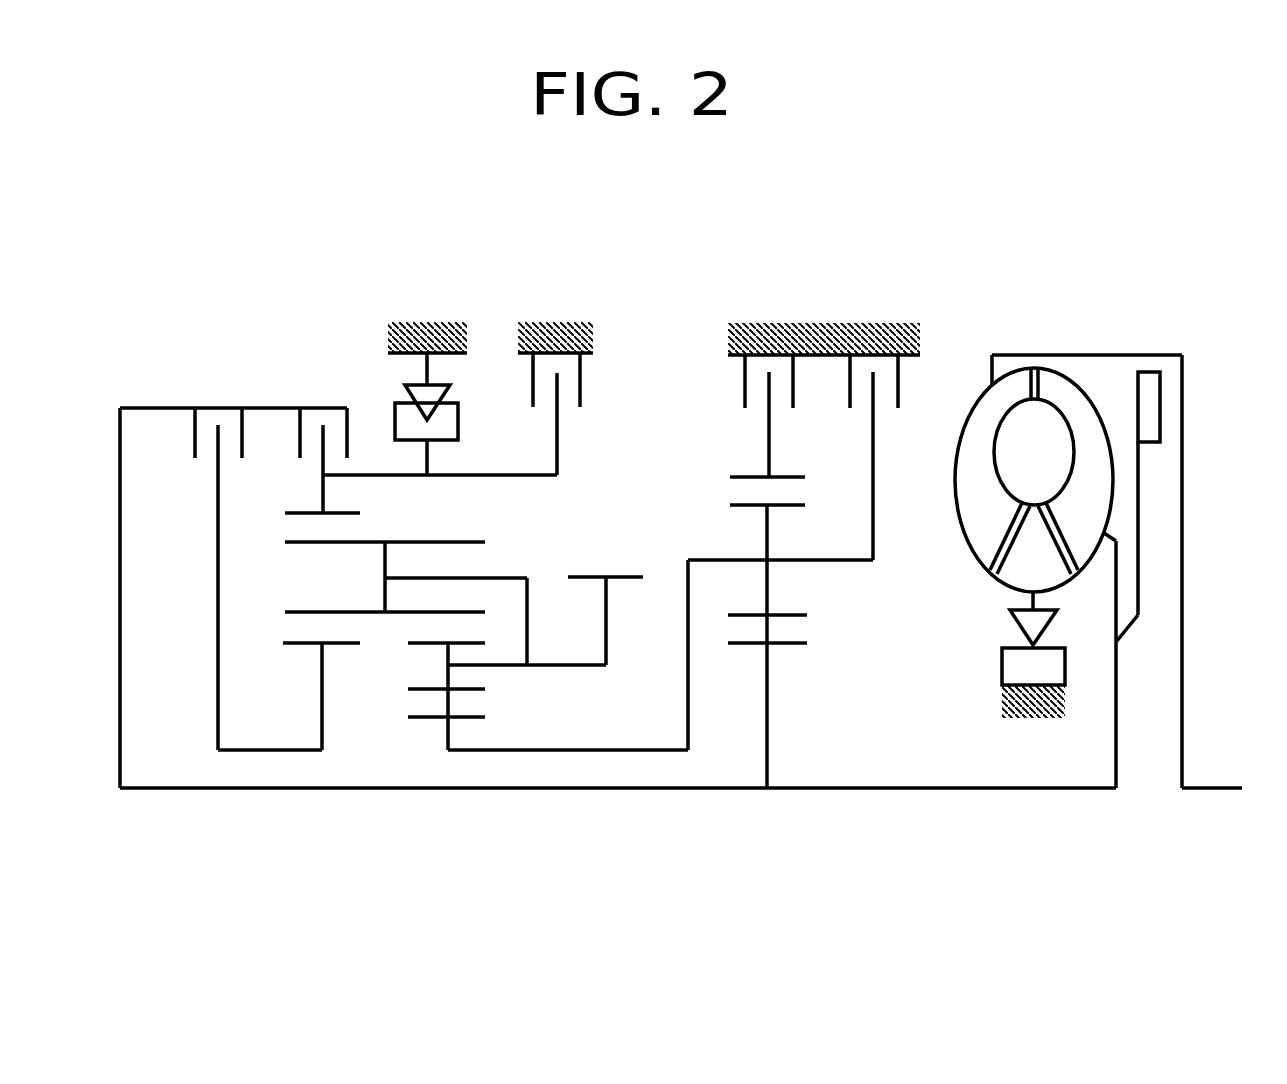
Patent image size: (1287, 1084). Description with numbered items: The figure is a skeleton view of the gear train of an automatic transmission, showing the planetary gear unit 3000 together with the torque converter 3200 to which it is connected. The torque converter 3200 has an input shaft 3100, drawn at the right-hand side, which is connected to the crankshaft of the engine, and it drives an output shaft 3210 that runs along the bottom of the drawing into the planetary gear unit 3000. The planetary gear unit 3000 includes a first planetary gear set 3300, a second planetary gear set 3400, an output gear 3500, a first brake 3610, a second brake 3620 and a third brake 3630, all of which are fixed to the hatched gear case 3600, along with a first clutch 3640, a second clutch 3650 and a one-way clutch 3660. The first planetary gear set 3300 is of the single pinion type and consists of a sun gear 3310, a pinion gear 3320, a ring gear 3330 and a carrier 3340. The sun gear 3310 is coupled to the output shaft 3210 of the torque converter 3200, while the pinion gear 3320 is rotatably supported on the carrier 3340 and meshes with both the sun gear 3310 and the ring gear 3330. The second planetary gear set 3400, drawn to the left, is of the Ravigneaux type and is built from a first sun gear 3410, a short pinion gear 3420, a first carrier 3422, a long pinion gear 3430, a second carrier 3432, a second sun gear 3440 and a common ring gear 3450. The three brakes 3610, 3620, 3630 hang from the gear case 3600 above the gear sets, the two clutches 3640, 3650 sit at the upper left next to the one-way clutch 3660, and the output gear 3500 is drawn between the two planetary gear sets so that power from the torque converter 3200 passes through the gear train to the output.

The planetary gear unit 3000 is at (692, 535).
The input shaft 3100 is at (1223, 610).
The torque converter 3200 is at (1068, 519).
The output shaft 3210 is at (618, 598).
The first planetary gear set 3300 is at (816, 659).
The sun gear S (UD) 3310 is at (813, 646).
The pinion gear 3320 is at (819, 595).
The ring gear R (UD) 3330 is at (800, 457).
The carrier C (UD) 3340 is at (820, 471).
The second planetary gear set 3400 is at (453, 692).
The sun gear S (D) 3410 is at (540, 656).
The short pinion gear 3420 is at (407, 696).
The carrier C (1) 3422 is at (496, 692).
The long pinion gear 3430 is at (426, 545).
The carrier C (2) 3432 is at (471, 603).
The sun gear S (S) 3440 is at (289, 691).
The ring gear R (1) (R (2)) 3450 is at (421, 504).
The output gear 3500 is at (585, 583).
The gear case 3600 is at (654, 295).
The B1 brake 3610 is at (898, 427).
The B2 brake 3620 is at (584, 426).
The B3 brake 3630 is at (726, 427).
The C1 clutch 3640 is at (186, 563).
The C2 clutch 3650 is at (289, 445).
The one-way clutch (F) 3660 is at (406, 398).